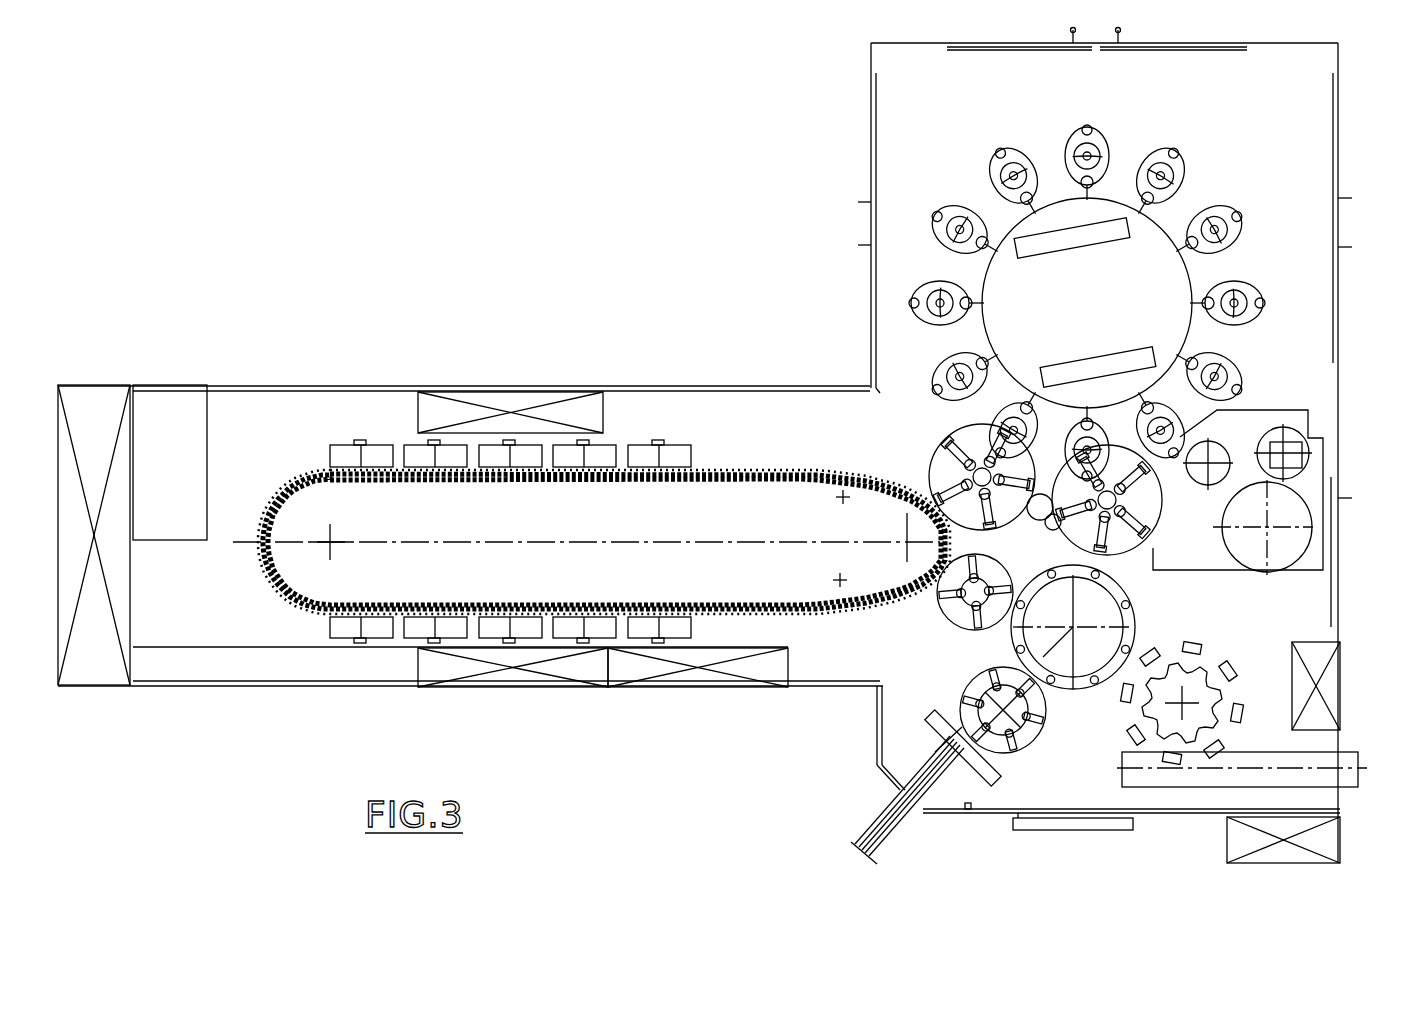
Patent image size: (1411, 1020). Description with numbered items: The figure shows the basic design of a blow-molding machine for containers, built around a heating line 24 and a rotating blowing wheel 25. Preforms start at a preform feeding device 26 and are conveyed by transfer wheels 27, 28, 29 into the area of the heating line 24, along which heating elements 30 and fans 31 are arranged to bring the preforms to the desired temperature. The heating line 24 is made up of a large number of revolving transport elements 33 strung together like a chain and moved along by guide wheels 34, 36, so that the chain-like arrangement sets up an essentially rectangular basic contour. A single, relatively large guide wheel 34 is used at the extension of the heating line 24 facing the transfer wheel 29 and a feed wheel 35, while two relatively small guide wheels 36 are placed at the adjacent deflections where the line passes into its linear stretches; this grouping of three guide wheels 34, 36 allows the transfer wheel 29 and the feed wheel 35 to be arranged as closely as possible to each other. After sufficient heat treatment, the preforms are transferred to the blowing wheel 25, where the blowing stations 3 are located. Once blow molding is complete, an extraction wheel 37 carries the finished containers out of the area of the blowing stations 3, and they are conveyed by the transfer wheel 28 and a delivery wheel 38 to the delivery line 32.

The blowing station 3 is at (923, 280).
The heating line 24 is at (650, 418).
The blowing wheel 25 is at (1018, 224).
The preform feeding device 26 is at (917, 813).
The transfer wheel 27 is at (1017, 753).
The transfer wheel 28 is at (1077, 693).
The transfer wheel 29 is at (947, 623).
The heating element 30 is at (382, 450).
The fan 31 is at (503, 412).
The delivery line 32 is at (1348, 778).
The transport element 33 is at (297, 603).
The guide wheel 34 is at (332, 545).
The feed wheel 35 is at (957, 423).
The guide wheel 36 is at (838, 493).
The extraction wheel 37 is at (1155, 527).
The delivery wheel 38 is at (1193, 717).